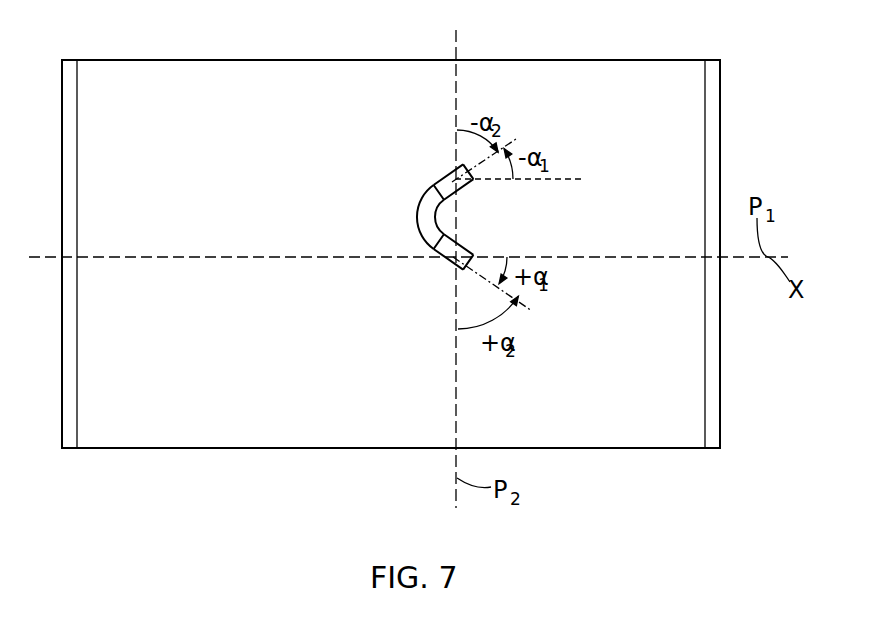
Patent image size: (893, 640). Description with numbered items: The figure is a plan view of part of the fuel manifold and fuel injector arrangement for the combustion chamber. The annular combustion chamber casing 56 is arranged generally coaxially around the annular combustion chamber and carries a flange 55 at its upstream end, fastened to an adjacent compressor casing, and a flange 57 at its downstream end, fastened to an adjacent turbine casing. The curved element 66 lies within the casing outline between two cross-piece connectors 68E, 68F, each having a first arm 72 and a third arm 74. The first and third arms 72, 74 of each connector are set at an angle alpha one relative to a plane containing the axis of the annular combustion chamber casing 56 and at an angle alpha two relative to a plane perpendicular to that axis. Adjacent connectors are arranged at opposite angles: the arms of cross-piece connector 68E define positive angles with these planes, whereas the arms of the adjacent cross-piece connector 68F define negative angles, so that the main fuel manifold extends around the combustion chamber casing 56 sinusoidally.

The flange 55 is at (72, 82).
The annular combustion chamber casing 56 is at (251, 60).
The flange 57 is at (713, 83).
The curved slot segment 66 is at (418, 210).
The cross-piece connector 68E is at (446, 271).
The cross-piece connector 68F is at (445, 176).
The first arm 72 is at (472, 178).
The third arm 74 is at (437, 184).